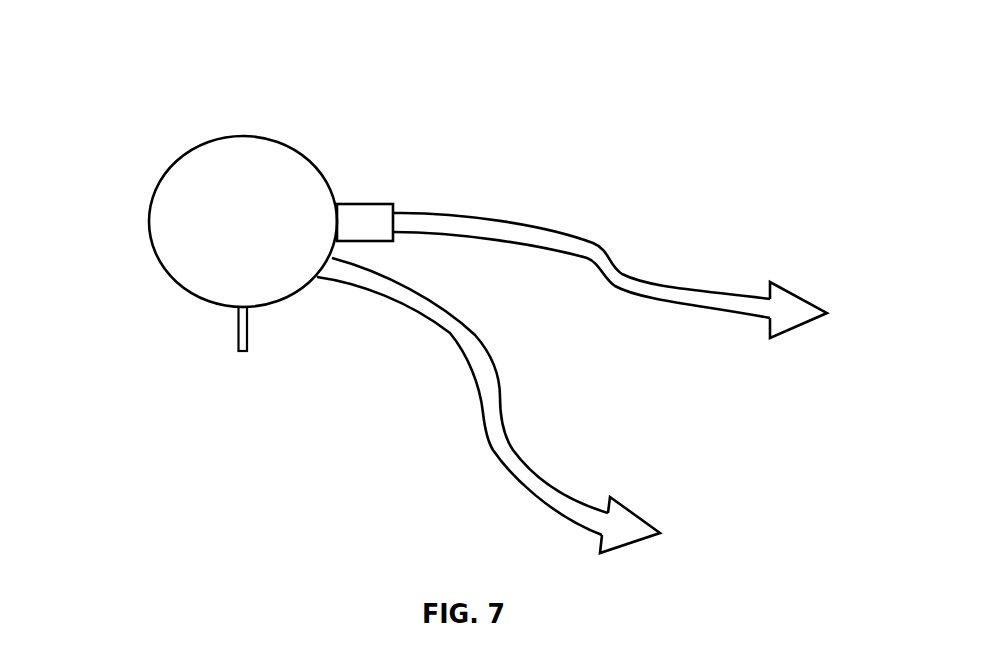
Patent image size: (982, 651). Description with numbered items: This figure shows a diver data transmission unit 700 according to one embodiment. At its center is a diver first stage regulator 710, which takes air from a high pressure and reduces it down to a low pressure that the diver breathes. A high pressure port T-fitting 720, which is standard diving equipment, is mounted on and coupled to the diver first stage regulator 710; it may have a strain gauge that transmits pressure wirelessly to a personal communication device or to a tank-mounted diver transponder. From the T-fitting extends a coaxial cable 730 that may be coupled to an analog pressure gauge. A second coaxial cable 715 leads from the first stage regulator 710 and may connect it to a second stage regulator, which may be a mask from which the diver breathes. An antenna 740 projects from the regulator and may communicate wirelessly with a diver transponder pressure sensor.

The diver transmission unit 700 is at (795, 55).
The diver first stage regulator 710 is at (137, 221).
The coaxial cable 715 is at (514, 390).
The high pressure port T-fitting 720 is at (364, 192).
The coaxial cable 730 is at (629, 249).
The antenna 740 is at (263, 339).